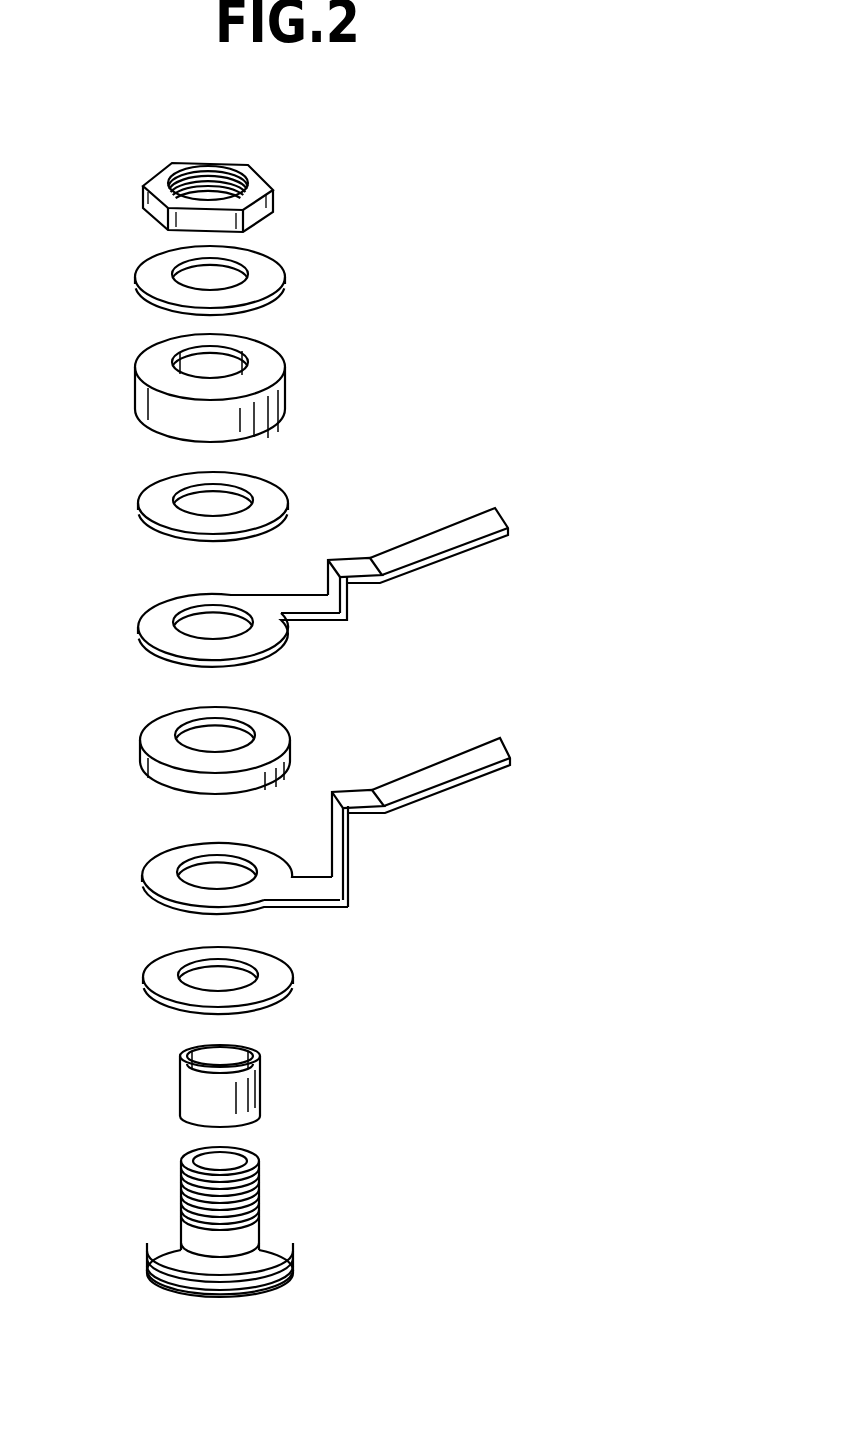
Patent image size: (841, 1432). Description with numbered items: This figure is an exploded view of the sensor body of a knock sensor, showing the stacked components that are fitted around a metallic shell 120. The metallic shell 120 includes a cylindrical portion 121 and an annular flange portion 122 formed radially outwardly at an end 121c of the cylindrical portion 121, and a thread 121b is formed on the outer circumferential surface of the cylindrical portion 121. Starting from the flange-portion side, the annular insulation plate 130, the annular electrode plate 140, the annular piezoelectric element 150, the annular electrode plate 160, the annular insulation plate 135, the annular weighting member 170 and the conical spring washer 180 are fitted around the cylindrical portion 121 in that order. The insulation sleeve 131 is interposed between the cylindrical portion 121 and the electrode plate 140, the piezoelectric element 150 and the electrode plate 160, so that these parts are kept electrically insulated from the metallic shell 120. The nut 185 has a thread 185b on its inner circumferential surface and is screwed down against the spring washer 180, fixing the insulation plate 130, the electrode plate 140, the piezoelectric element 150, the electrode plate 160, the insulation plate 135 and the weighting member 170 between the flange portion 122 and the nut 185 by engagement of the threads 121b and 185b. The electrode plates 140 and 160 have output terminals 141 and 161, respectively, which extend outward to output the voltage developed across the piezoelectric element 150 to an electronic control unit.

The nut 185 is at (260, 193).
The thread 185b is at (220, 163).
The conical spring washer 180 is at (260, 270).
The annular weighting member 170 is at (263, 405).
The annular insulation plate 135 is at (267, 493).
The annular electrode plate 160 is at (290, 560).
The output terminal 161 is at (443, 533).
The annular piezoelectric element 150 is at (163, 732).
The annular electrode plate 140 is at (296, 801).
The output terminal 141 is at (455, 763).
The annular insulation plate 130 is at (275, 970).
The insulation sleeve 131 is at (192, 1093).
The metallic shell 120 is at (260, 1212).
The cylindrical portion 121 is at (231, 1199).
The thread 121b is at (260, 1198).
The end 121c is at (178, 1290).
The annular flange portion 122 is at (260, 1262).